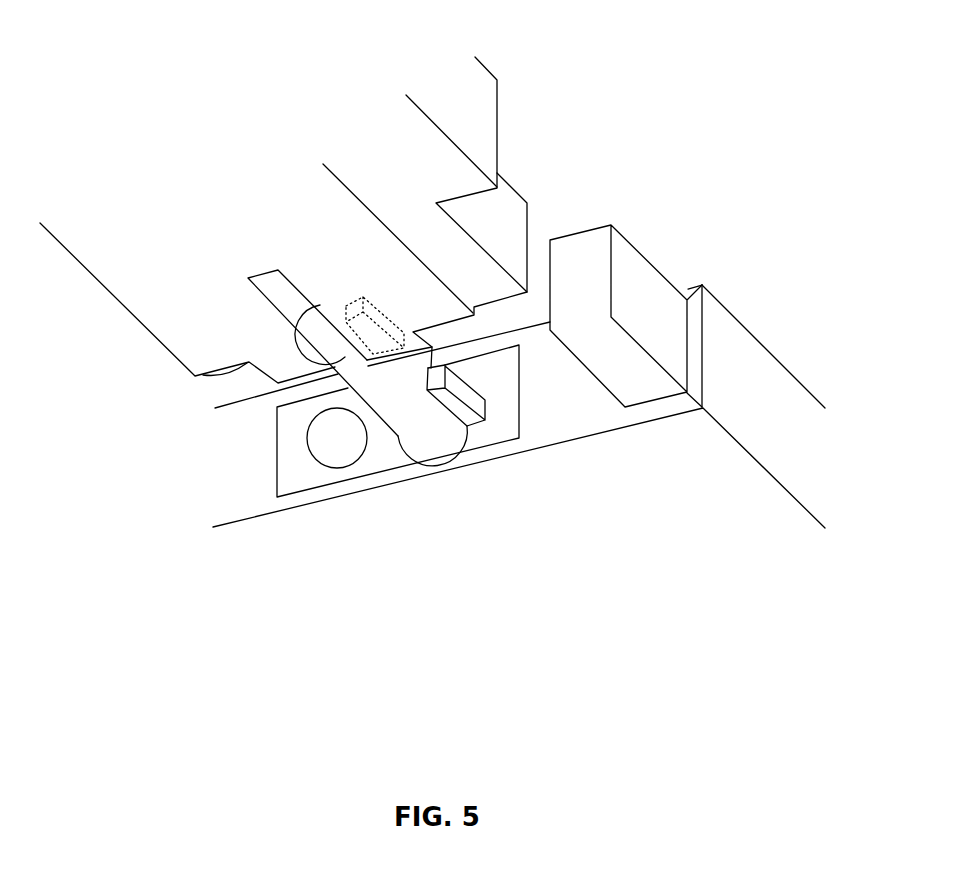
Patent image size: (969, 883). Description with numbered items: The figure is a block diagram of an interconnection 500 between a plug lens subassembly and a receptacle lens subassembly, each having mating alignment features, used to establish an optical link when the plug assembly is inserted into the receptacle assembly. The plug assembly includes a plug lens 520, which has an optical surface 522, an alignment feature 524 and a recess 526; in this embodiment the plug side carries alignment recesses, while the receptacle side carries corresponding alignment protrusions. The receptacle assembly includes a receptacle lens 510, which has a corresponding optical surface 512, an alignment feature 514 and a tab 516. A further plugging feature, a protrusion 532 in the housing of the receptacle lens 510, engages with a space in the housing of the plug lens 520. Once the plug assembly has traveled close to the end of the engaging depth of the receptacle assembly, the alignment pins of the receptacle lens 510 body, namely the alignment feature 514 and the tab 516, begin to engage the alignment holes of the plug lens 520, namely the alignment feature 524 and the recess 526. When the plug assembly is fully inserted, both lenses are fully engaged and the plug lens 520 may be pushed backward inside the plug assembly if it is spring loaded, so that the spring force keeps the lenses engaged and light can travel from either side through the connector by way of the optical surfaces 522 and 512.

The interconnection 500 is at (432, 311).
The receptacle lens 510 is at (712, 266).
The optical surface 512 is at (368, 462).
The alignment feature 514 is at (426, 442).
The tab 516 is at (481, 426).
The plug lens 520 is at (516, 146).
The optical surface 522 is at (206, 378).
The alignment feature 524 is at (257, 281).
The recess 526 is at (356, 300).
The protrusion 532 is at (655, 317).